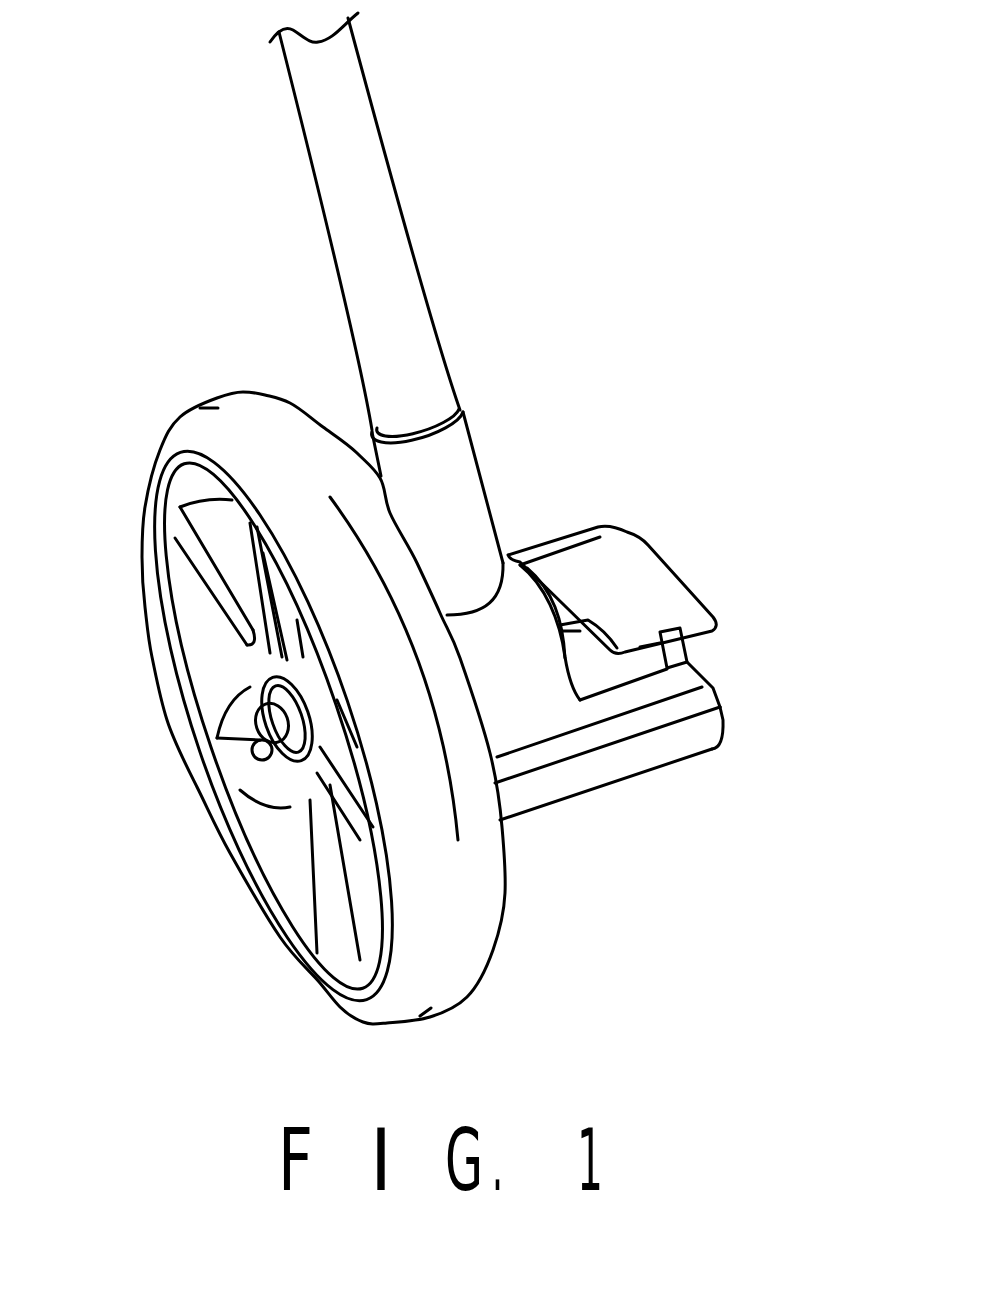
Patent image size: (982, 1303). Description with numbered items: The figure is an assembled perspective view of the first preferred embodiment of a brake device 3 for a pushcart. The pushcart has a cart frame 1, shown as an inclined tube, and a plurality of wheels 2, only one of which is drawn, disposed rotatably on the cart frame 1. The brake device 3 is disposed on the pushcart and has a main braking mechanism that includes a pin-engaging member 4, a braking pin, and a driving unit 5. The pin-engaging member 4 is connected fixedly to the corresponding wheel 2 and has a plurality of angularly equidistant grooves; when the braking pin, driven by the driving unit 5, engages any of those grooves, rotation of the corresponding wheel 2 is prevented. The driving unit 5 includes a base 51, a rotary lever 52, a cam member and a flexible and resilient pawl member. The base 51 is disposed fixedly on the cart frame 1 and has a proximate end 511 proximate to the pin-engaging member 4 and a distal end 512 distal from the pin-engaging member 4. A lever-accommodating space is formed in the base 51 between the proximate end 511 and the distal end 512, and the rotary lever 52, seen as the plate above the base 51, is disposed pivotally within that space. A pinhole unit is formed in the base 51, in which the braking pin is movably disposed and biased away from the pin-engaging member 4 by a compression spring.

The cart frame 1 is at (347, 122).
The wheel 2 is at (187, 435).
The brake device 3 is at (622, 850).
The pin-engaging member 4 is at (263, 773).
The driving unit 5 is at (676, 733).
The base 51 is at (722, 760).
The proximate end 511 is at (520, 693).
The distal end 512 is at (680, 652).
The rotary lever 52 is at (655, 596).